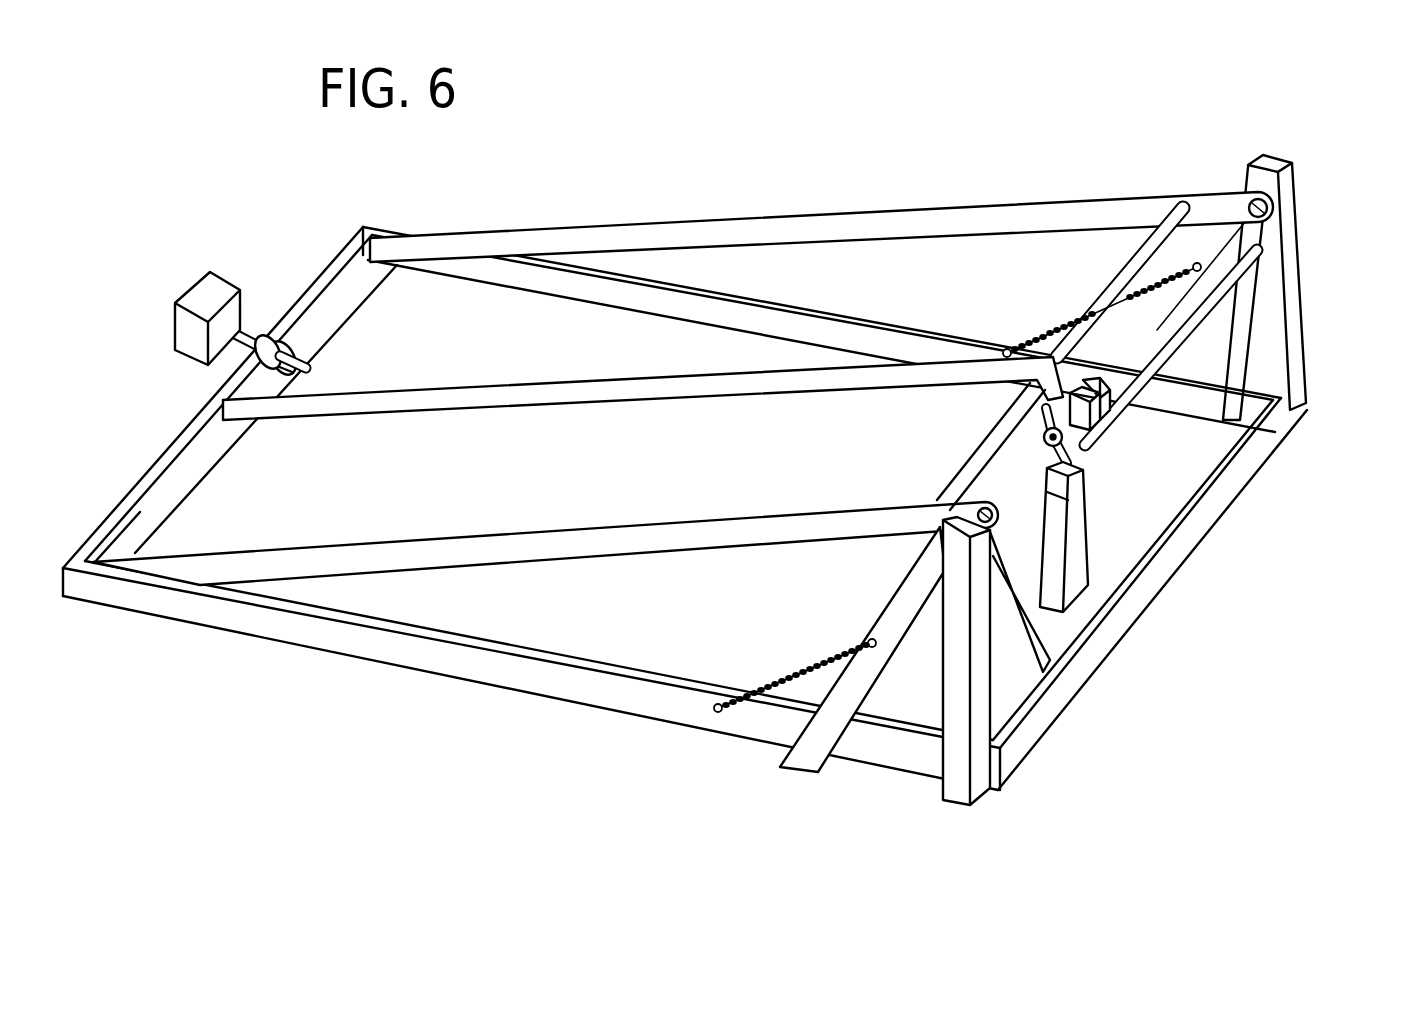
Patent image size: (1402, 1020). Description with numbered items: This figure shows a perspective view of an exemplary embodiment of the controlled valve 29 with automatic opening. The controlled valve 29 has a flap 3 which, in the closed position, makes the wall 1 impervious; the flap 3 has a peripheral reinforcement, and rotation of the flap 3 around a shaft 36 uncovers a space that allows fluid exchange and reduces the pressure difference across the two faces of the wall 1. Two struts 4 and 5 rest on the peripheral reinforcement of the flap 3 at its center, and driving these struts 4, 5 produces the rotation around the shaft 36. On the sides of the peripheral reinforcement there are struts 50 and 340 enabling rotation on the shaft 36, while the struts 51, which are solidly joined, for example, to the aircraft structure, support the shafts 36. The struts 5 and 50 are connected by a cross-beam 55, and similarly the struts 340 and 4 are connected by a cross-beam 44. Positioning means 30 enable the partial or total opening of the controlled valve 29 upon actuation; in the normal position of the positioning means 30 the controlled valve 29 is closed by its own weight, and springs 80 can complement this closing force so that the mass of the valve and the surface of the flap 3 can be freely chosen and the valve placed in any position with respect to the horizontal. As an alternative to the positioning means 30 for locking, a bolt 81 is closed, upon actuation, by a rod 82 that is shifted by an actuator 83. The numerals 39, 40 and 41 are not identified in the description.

The wall 1 is at (685, 517).
The flap 3 is at (545, 637).
The strut 4 is at (1082, 510).
The strut 5 is at (668, 384).
The controlled valve 29 is at (556, 724).
The positioning means 30 is at (1083, 438).
The shaft 36 is at (1266, 216).
The rail 39 is at (373, 647).
The rod 40 is at (1087, 372).
The block 41 is at (1096, 405).
The cross-beam 44 is at (1200, 323).
The strut 50 is at (840, 208).
The strut 51 is at (1300, 285).
The cross-beam 55 is at (977, 460).
The spring 80 is at (1062, 330).
The bolt 81 is at (273, 340).
The rod 82 is at (242, 342).
The actuator 83 is at (180, 328).
The strut 340 is at (1238, 420).